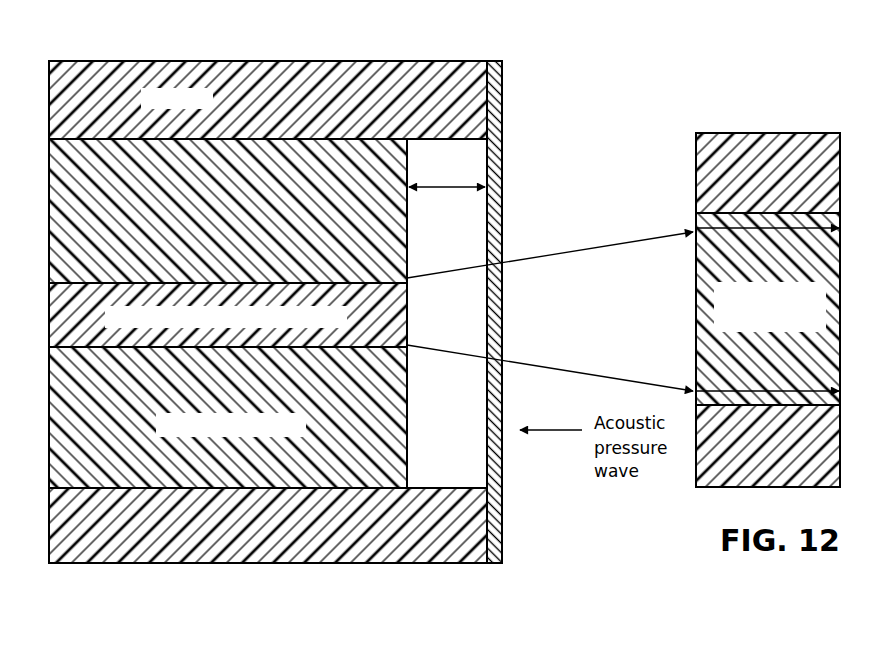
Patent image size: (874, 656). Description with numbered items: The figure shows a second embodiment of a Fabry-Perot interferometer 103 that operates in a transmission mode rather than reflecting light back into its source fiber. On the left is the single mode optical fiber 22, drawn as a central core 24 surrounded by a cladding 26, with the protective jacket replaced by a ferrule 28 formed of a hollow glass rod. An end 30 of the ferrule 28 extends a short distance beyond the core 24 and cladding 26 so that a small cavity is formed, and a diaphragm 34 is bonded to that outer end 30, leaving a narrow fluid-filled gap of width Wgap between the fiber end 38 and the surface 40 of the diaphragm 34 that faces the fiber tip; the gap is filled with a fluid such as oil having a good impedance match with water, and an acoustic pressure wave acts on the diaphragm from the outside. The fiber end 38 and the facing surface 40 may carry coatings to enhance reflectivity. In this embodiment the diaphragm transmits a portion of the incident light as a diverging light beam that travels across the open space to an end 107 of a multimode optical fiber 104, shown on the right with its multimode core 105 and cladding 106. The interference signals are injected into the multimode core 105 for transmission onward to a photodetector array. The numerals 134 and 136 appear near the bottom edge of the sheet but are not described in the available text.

The optical fiber 22 is at (172, 580).
The core 24 is at (90, 345).
The cladding 26 is at (252, 138).
The ferrule 28 is at (400, 62).
The end of the ferrule 30 is at (502, 108).
The diaphragm 34 is at (500, 193).
The fiber end 38 is at (407, 328).
The surface of the diaphragm 40 is at (495, 466).
The Fabry-Perot interferometer 103 is at (573, 542).
The multimode optical fiber 104 is at (739, 334).
The multimode core 105 is at (808, 212).
The cladding 106 is at (727, 133).
The end of the multimode optical fiber 107 is at (695, 258).
The element 134 is at (700, 653).
The element 136 is at (852, 647).